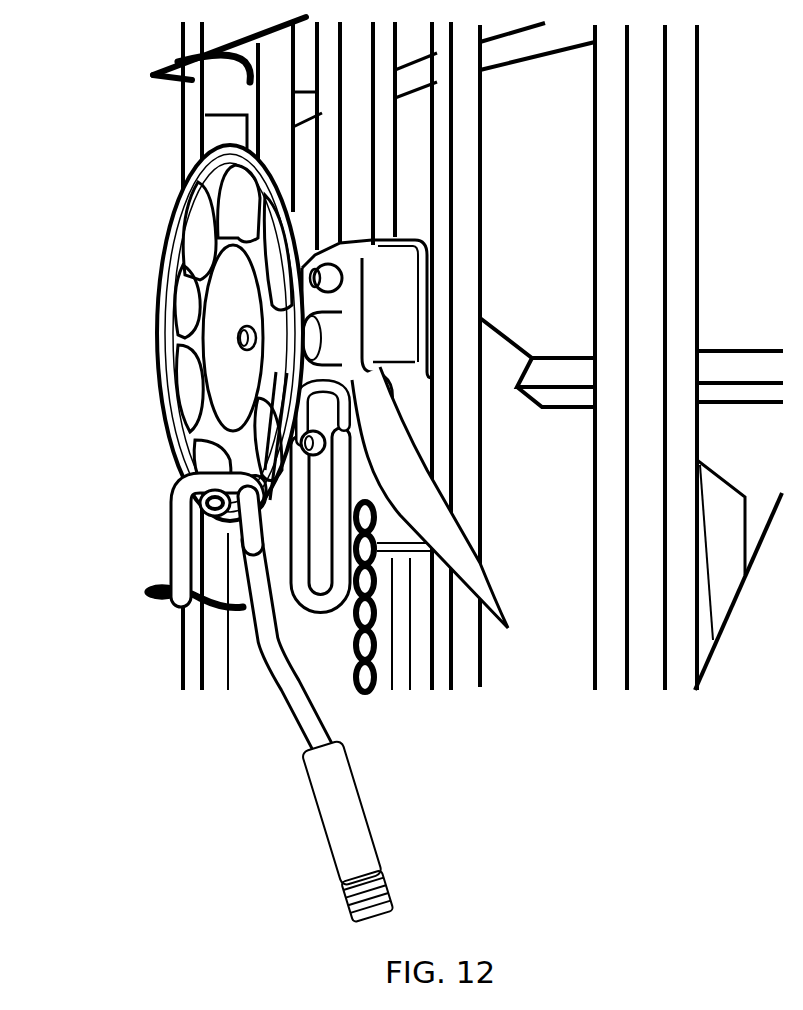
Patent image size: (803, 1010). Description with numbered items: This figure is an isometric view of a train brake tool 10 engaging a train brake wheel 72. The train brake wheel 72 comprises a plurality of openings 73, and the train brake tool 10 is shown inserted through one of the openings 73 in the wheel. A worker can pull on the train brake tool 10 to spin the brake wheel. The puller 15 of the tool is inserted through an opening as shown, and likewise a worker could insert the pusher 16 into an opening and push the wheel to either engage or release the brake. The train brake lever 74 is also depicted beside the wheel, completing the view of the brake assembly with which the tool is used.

The train brake tool 10 is at (248, 709).
The puller 15 is at (185, 548).
The pusher 16 is at (243, 614).
The train brake wheel 72 is at (215, 362).
The opening 73 is at (200, 225).
The train brake lever 74 is at (428, 517).